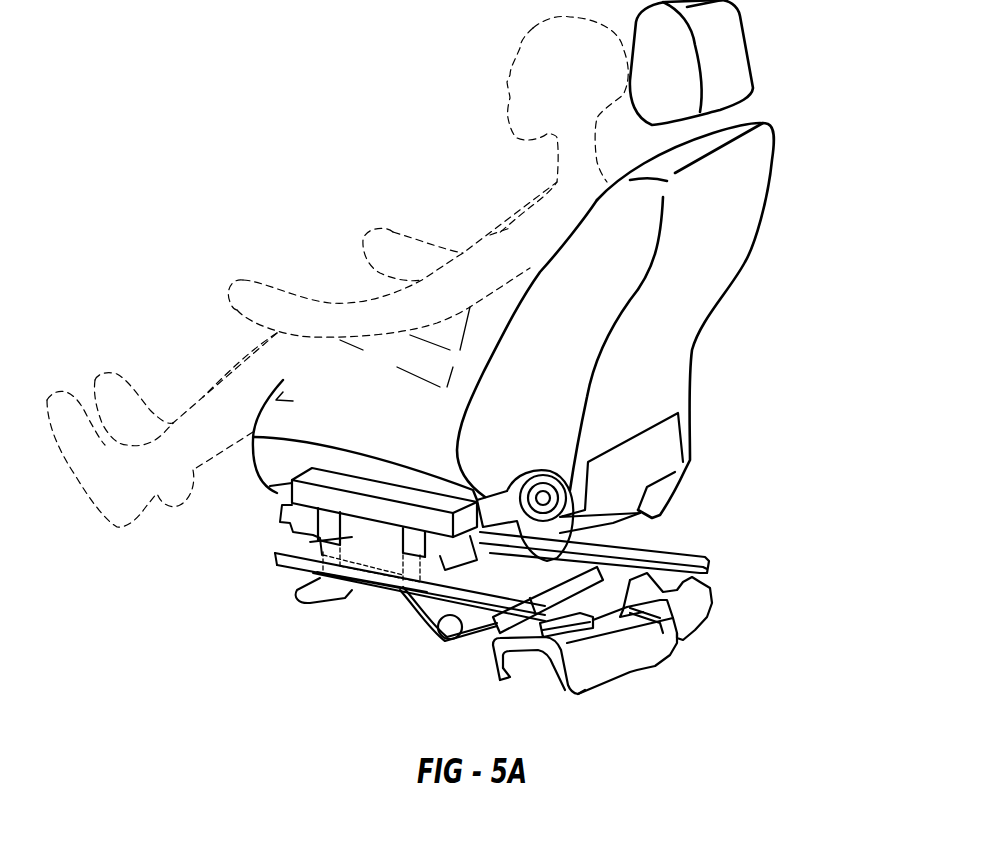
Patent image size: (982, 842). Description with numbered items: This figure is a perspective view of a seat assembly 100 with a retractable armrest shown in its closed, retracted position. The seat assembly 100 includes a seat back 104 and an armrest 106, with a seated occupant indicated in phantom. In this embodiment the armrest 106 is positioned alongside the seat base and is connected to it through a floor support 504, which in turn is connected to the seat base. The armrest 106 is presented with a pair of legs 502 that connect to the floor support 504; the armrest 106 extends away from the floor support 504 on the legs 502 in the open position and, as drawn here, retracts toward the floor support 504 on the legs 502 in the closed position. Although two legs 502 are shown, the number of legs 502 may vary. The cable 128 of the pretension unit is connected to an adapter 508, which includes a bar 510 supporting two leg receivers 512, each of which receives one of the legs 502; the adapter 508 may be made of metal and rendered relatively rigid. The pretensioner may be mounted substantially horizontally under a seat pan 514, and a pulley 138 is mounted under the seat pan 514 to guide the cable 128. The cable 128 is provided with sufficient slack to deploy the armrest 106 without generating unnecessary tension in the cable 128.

The seat assembly 100 is at (184, 640).
The seat back 104 is at (786, 146).
The armrest 106 is at (324, 470).
The cable 128 is at (417, 615).
The pulley 138 is at (450, 630).
The legs 502 is at (264, 528).
The floor support 504 is at (437, 568).
The adapter 508 is at (360, 596).
The bar 510 is at (383, 551).
The leg receivers 512 is at (354, 548).
The seat pan 514 is at (691, 549).